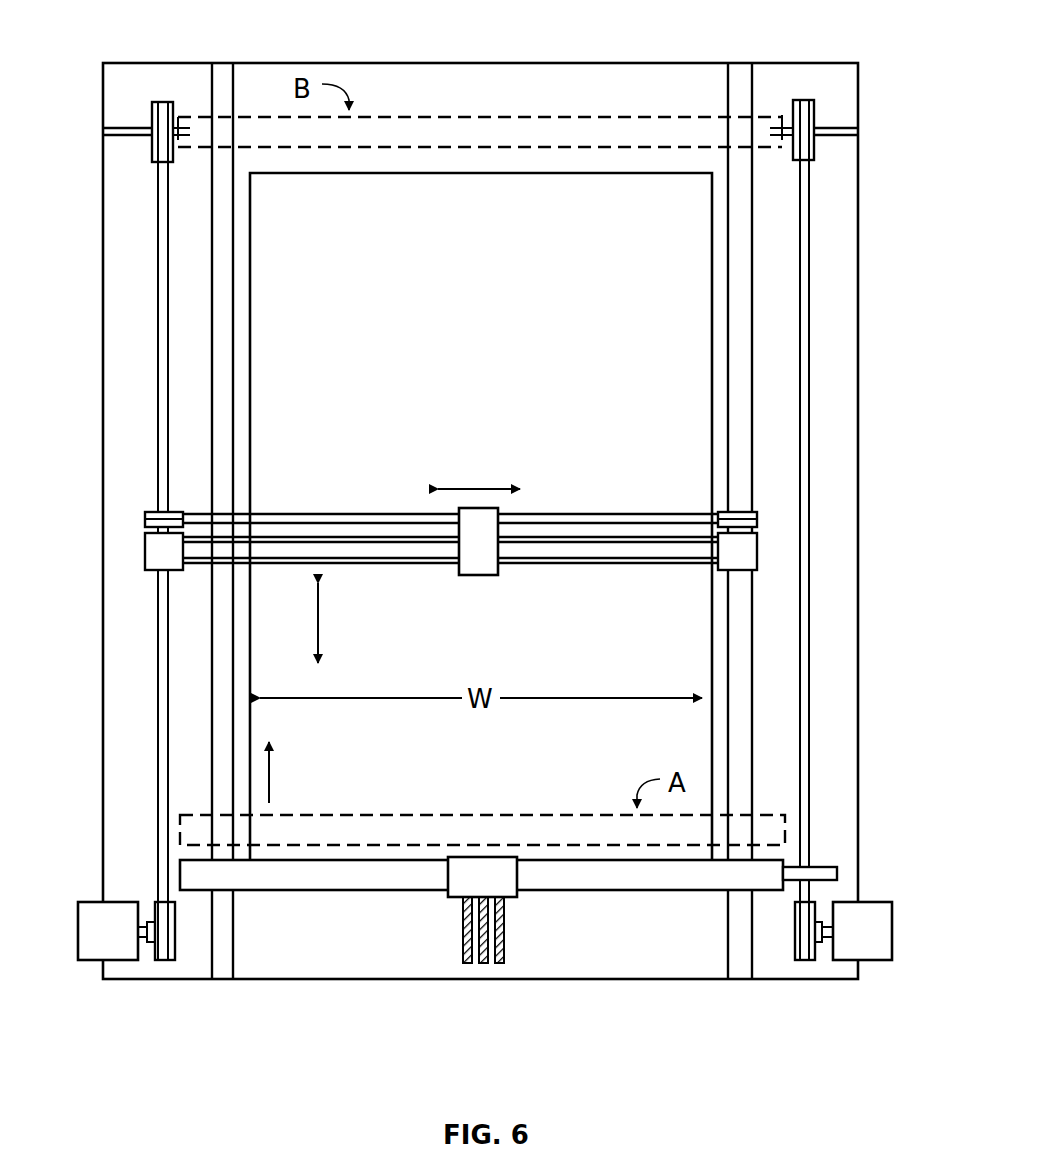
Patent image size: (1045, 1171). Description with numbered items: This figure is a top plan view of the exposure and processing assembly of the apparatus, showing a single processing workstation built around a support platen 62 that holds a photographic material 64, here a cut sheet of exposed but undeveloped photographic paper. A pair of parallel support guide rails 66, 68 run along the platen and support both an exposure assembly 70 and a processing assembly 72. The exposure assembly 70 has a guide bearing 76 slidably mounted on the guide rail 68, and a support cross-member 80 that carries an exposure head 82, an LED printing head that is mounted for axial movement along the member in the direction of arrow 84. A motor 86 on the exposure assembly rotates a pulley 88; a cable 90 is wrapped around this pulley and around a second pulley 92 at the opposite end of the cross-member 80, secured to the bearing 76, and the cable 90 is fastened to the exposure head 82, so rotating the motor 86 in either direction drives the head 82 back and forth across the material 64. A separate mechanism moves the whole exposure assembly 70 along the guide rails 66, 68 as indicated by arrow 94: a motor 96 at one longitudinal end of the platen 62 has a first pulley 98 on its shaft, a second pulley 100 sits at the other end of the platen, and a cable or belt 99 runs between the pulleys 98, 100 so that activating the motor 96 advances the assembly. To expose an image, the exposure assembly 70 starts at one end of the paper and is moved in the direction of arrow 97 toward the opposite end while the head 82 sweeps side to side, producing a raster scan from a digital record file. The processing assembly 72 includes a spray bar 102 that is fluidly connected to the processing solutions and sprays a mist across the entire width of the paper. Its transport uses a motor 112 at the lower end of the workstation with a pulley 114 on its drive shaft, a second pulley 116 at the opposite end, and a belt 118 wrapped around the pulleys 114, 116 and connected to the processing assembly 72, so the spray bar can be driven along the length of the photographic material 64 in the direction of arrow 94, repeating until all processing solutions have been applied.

The support platen 62 is at (475, 85).
The photographic material 64 is at (522, 274).
The support guide rail 66 is at (222, 673).
The support guide rail 68 is at (740, 373).
The exposure assembly 70 is at (450, 541).
The processing assembly 72 is at (388, 848).
The guide bearing 76 is at (735, 558).
The support cross-member 80 is at (357, 515).
The exposure head 82 is at (478, 555).
The arrow 84 is at (468, 490).
The motor 86 is at (162, 553).
The pulley 88 is at (175, 510).
The cable 90 is at (620, 513).
The second pulley 92 is at (737, 512).
The arrow 94 is at (320, 632).
The motor 96 is at (82, 962).
The arrow 97 is at (290, 772).
The first pulley 98 is at (175, 950).
The cable or belt 99 is at (158, 340).
The second pulley 100 is at (152, 118).
The spray bar 102 is at (628, 888).
The motor 112 is at (893, 912).
The pulley 114 is at (800, 965).
The second pulley 116 is at (814, 145).
The belt 118 is at (803, 280).